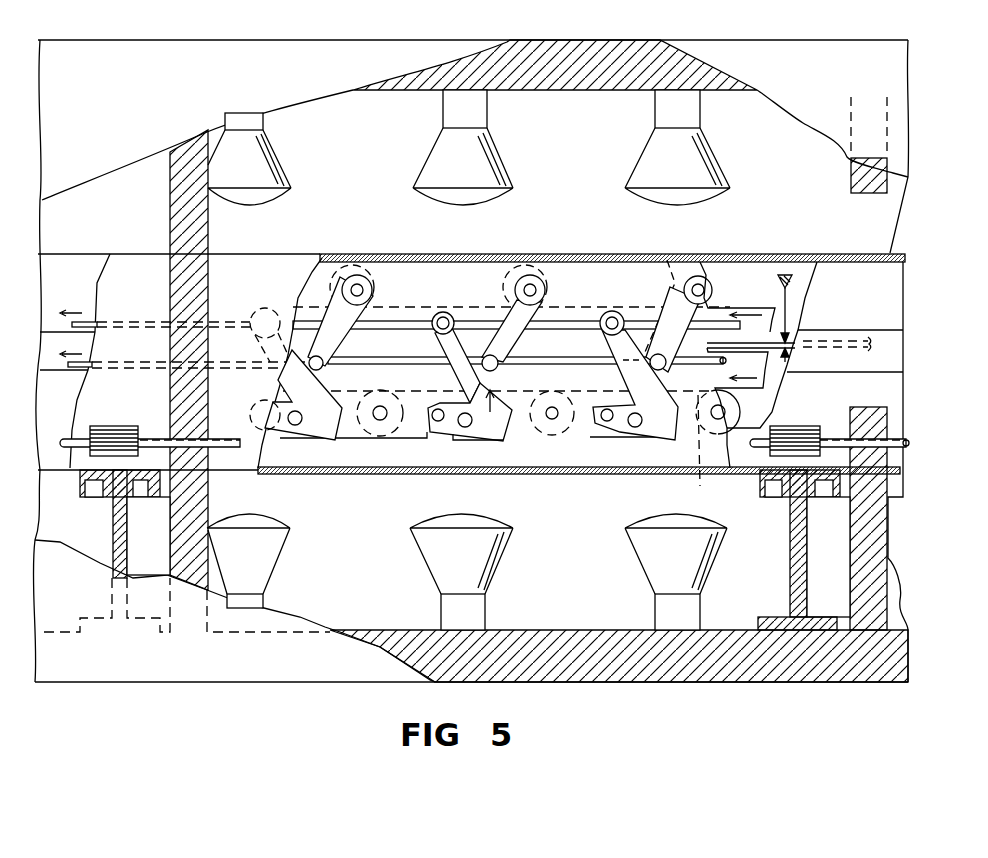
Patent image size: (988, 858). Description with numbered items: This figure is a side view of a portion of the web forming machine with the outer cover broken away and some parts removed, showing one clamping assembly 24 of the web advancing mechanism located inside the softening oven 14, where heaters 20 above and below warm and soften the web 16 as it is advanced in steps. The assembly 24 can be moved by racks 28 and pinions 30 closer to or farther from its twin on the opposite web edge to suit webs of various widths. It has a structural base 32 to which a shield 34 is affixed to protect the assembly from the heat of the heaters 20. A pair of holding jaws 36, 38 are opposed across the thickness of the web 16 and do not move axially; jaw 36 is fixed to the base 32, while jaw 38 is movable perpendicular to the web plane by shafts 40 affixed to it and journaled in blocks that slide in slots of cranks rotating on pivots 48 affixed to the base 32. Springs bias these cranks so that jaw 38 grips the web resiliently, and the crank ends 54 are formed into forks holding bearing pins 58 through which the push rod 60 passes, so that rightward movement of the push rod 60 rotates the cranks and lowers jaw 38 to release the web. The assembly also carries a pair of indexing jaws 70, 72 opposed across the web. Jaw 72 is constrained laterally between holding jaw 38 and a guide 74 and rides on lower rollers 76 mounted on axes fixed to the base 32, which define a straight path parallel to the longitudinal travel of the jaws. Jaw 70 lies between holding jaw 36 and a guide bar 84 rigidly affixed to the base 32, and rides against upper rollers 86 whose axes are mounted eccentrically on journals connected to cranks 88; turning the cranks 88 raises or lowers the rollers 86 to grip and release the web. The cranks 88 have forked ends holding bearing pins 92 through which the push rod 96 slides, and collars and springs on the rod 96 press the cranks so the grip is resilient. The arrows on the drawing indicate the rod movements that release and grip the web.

The softening oven 14 is at (320, 34).
The web 16 is at (834, 347).
The heaters 20 is at (430, 157).
The clamping assembly 24 is at (753, 233).
The racks 28 is at (78, 483).
The pinions 30 is at (132, 427).
The structural base 32 is at (330, 458).
The shield 34 is at (288, 253).
The holding jaw 36 is at (793, 318).
The holding jaw 38 is at (783, 377).
The shafts 40 is at (636, 428).
The pivots 48 is at (606, 408).
The crank ends 54 is at (608, 342).
The bearing pins 58 is at (614, 311).
The push rod 60 is at (97, 312).
The indexing jaw 70 is at (768, 307).
The indexing jaw 72 is at (757, 383).
The guide 74 is at (522, 434).
The lower rollers 76 is at (704, 453).
The guide bar 84 is at (488, 268).
The upper rollers 86 is at (338, 258).
The cranks 88 is at (335, 349).
The bearing pins 92 is at (325, 370).
The push rod 96 is at (83, 372).